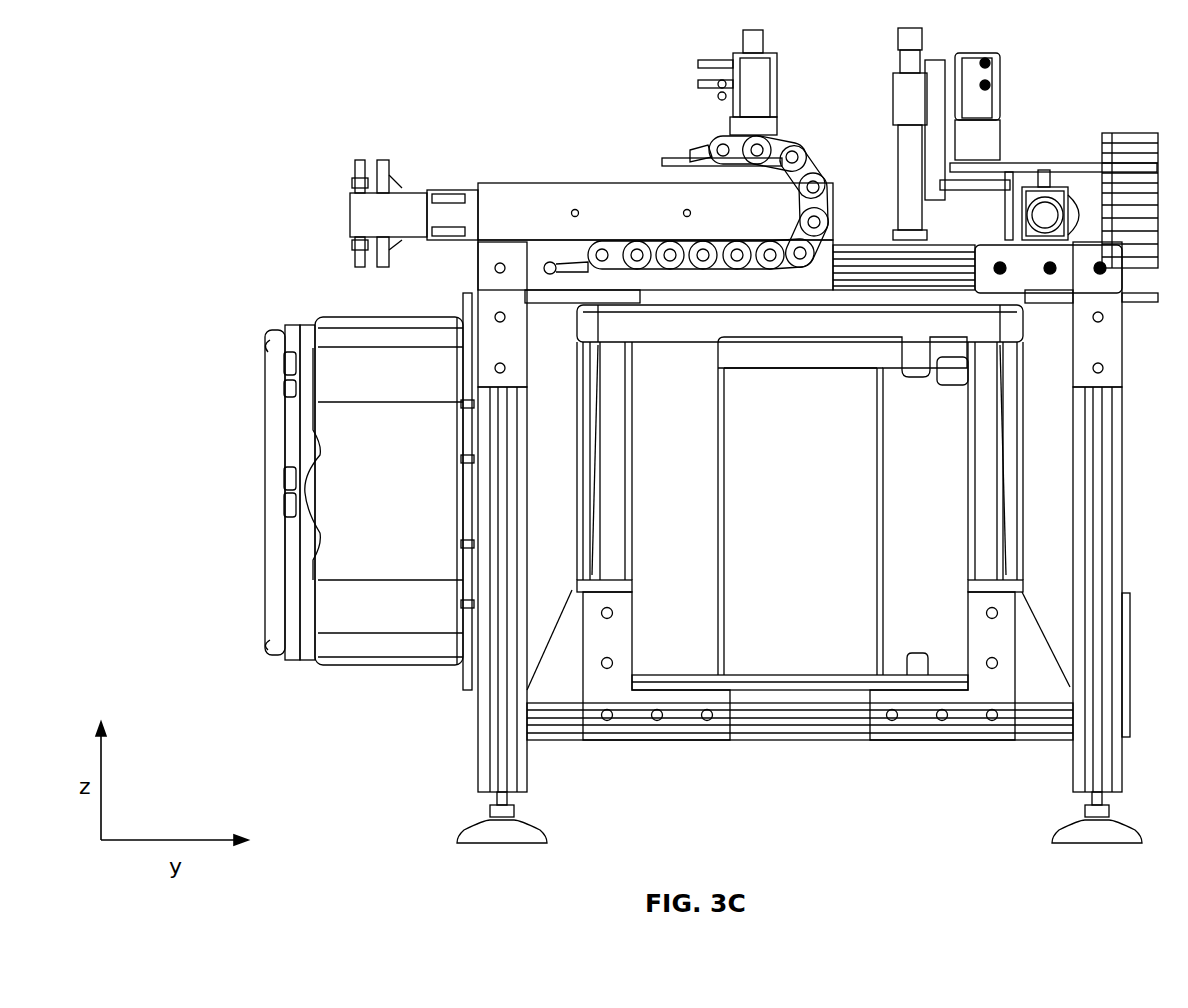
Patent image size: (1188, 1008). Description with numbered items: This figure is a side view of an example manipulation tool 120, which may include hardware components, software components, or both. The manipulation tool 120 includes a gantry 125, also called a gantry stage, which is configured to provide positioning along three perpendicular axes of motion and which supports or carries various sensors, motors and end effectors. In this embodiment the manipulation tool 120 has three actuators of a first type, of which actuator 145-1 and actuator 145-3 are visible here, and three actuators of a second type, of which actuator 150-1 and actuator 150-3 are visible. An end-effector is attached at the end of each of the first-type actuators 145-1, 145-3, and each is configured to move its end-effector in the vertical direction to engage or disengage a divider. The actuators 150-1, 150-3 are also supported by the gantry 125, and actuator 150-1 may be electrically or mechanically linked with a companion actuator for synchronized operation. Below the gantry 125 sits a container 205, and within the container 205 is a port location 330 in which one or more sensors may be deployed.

The manipulation tool 120 is at (157, 78).
The gantry 125 is at (500, 745).
The actuator 145-1 is at (750, 43).
The actuator 145-3 is at (915, 40).
The actuator 150-1 is at (357, 218).
The actuator 150-3 is at (1045, 205).
The container 205 is at (775, 637).
The port location 330 is at (952, 378).